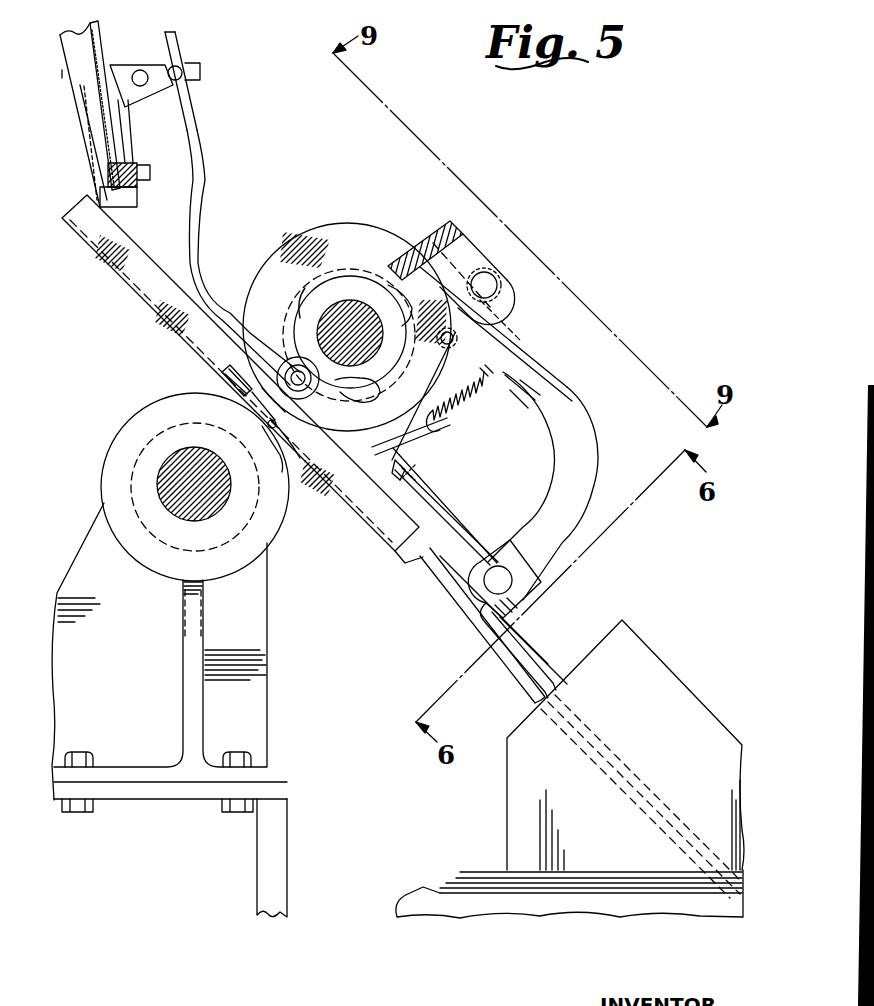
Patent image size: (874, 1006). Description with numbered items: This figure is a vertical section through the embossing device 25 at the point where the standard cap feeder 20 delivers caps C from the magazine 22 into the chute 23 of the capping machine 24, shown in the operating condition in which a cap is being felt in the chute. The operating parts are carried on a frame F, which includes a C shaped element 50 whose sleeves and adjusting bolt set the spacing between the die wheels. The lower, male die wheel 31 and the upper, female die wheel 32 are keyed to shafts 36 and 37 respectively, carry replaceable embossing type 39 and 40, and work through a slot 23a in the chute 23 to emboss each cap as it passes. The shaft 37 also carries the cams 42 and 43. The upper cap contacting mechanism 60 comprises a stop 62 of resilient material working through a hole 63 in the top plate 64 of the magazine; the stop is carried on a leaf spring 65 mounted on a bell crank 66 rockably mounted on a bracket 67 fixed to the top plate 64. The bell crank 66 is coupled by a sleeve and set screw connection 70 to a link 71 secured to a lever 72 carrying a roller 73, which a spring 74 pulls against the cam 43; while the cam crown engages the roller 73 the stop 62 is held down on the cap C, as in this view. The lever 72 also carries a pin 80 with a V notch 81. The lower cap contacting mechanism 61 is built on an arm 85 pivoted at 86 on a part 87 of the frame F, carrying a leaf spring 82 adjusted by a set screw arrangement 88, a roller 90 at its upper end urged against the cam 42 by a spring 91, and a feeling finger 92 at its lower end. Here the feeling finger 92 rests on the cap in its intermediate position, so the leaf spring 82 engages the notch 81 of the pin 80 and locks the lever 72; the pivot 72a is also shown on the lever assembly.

The cap feeder 20 is at (60, 74).
The magazine 22 is at (70, 100).
The chute 23 is at (115, 279).
The slot 23a is at (324, 466).
The capping machine 24 is at (652, 661).
The embossing device 25 is at (445, 226).
The lower die wheel 31 is at (123, 430).
The upper die wheel 32 is at (374, 236).
The shaft 36 is at (190, 458).
The shaft 37 is at (359, 302).
The embossing type 39 is at (282, 472).
The embossing type 40 is at (258, 418).
The cam 42 is at (330, 276).
The cam 43 is at (300, 318).
The C shaped element 50 is at (438, 231).
The upper cap contacting mechanism 60 is at (179, 41).
The lower cap contacting mechanism 61 is at (512, 642).
The stop 62 is at (108, 175).
The hole 63 is at (138, 196).
The top plate 64 is at (96, 33).
The leaf spring 65 is at (131, 136).
The bell crank 66 is at (160, 67).
The bracket 67 is at (125, 65).
The sleeve and set screw connection 70 is at (200, 72).
The link 71 is at (206, 190).
The lever 72 is at (488, 362).
The pivot 72a is at (497, 285).
The roller 73 is at (440, 429).
The spring 74 is at (412, 316).
The pin 80 is at (412, 431).
The V notch 81 is at (376, 386).
The leaf spring 82 is at (450, 495).
The arm 85 is at (468, 530).
The pivot 86 is at (486, 573).
The part of the frame 87 is at (577, 413).
The set screw arrangement 88 is at (395, 466).
The roller 90 is at (290, 368).
The spring 91 is at (472, 396).
The feeling finger 92 is at (533, 668).
The caps C is at (88, 123).
The frame F is at (280, 857).